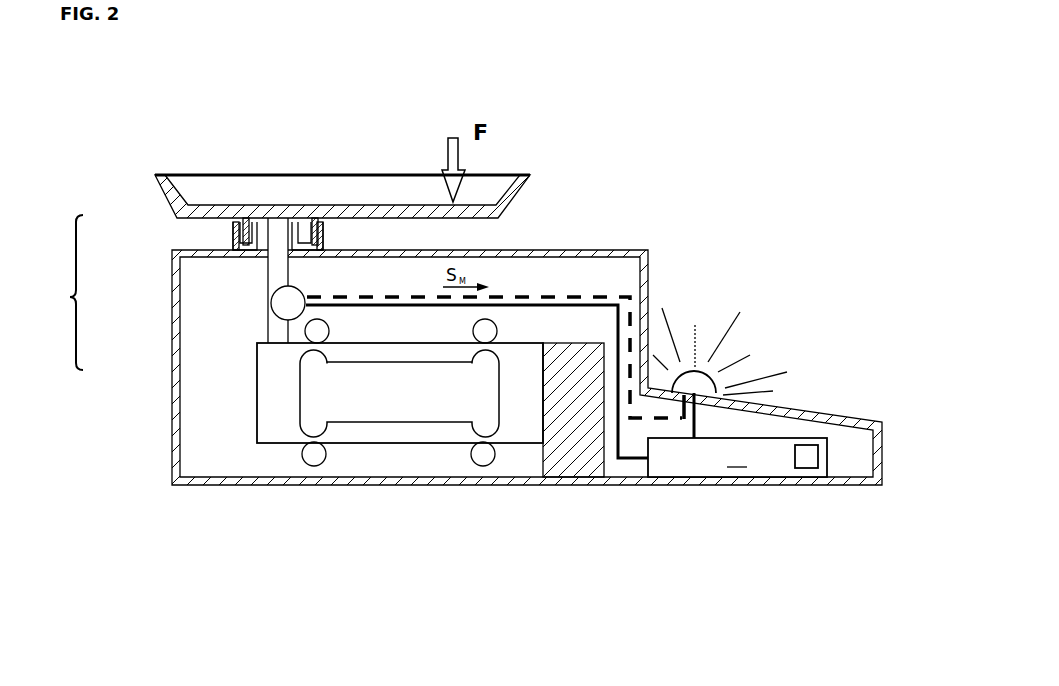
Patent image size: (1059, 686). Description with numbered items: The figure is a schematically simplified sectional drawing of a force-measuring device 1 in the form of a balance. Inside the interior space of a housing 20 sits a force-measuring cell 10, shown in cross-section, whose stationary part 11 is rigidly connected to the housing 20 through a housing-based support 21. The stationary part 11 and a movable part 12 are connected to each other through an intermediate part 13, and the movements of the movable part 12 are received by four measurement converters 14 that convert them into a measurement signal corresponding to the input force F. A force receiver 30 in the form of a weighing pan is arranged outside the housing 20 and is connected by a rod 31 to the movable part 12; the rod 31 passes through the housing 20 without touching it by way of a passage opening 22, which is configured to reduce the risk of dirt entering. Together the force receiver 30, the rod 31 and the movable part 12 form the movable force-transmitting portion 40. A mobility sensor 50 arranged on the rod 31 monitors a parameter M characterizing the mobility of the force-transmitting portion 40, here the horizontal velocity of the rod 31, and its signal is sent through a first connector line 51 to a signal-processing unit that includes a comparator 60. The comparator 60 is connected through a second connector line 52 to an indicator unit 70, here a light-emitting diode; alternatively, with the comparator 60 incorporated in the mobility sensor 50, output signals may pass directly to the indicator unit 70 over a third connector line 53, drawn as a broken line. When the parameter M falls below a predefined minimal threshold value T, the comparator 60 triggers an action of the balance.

The force-measuring device 1 is at (96, 127).
The force-measuring cell 10 is at (273, 468).
The stationary part 11 is at (517, 420).
The movable part 12 is at (278, 402).
The intermediate part 13 is at (400, 435).
The measurement converters 14 is at (321, 320).
The housing 20 is at (220, 482).
The housing-based support 21 is at (568, 433).
The passage opening 22 is at (317, 218).
The force receiver 30 is at (208, 185).
The rod 31 is at (277, 270).
The force-transmitting portion 40 is at (54, 292).
The mobility sensor 50 is at (292, 297).
The first connector line 51 is at (565, 297).
The second connector line 52 is at (695, 418).
The third connector line 53 is at (600, 305).
The comparator 60 is at (737, 457).
The indicator unit 70 is at (694, 388).